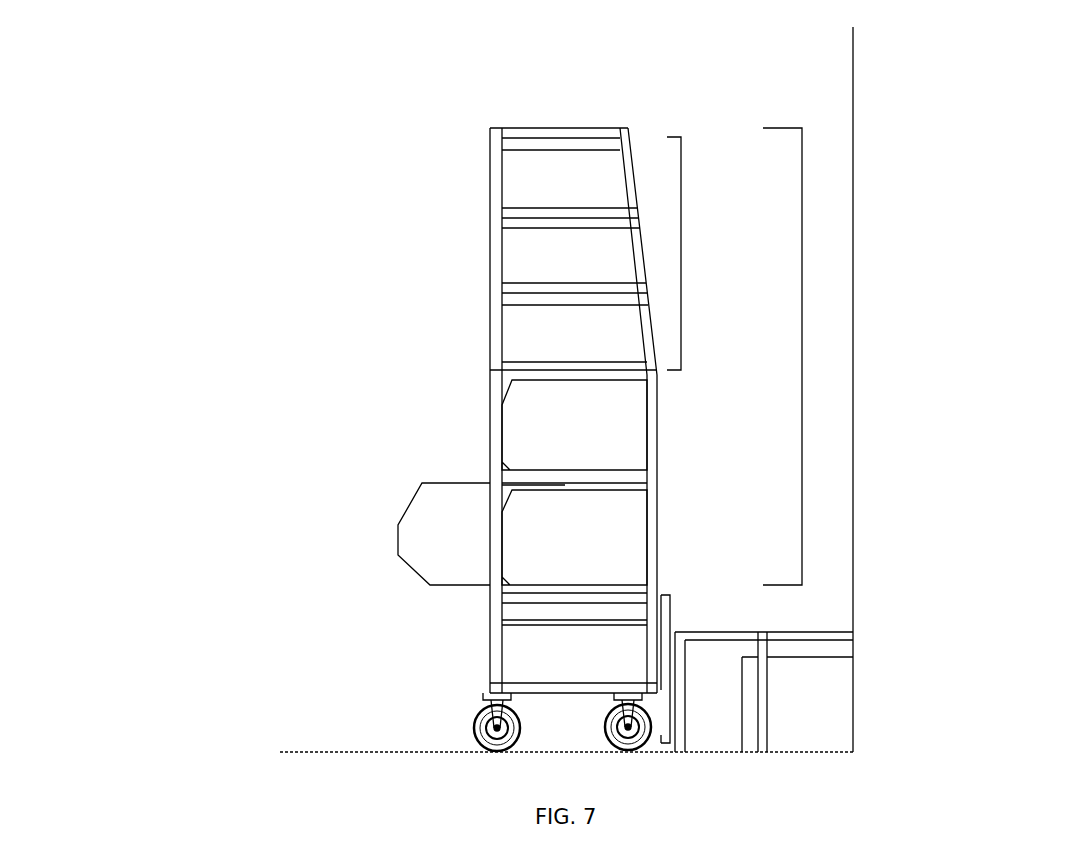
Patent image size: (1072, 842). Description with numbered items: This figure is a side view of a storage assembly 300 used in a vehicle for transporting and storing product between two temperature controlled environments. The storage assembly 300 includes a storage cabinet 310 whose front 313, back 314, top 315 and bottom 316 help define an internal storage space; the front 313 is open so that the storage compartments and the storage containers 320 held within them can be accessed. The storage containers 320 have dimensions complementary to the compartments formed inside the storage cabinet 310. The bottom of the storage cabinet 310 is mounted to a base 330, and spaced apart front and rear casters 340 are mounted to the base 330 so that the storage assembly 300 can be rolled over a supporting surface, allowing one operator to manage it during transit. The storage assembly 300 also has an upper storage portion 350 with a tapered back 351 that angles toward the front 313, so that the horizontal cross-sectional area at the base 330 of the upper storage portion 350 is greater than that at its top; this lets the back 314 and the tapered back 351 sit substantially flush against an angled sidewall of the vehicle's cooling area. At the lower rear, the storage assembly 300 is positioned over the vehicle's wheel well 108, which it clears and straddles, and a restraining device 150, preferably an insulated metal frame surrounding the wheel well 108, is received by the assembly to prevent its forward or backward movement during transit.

The storage assembly 300 is at (355, 160).
The front 313 is at (490, 370).
The top 315 is at (562, 133).
The bottom 316 is at (583, 697).
The tapered back 351 is at (625, 178).
The back 314 is at (650, 395).
The upper storage portion 350 is at (684, 260).
The storage cabinet 310 is at (805, 202).
The storage container 320 is at (452, 543).
The caster 340 is at (475, 723).
The base 330 is at (670, 675).
The wheel well 108 is at (812, 683).
The restraining device 150 is at (765, 633).